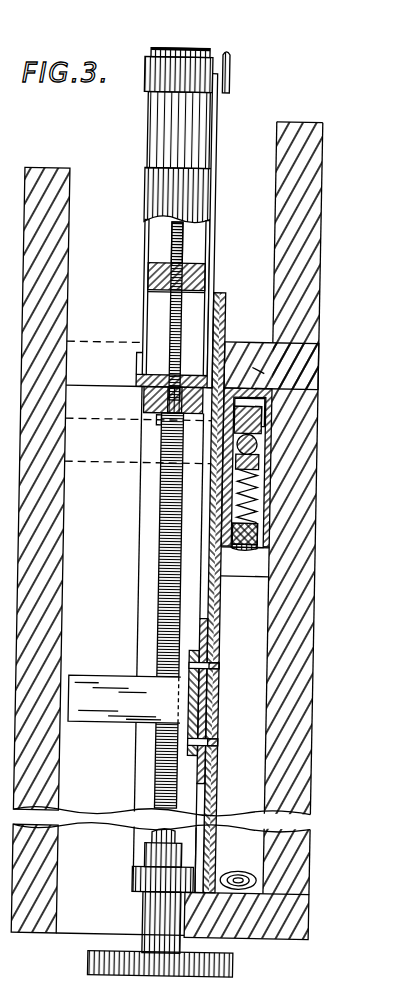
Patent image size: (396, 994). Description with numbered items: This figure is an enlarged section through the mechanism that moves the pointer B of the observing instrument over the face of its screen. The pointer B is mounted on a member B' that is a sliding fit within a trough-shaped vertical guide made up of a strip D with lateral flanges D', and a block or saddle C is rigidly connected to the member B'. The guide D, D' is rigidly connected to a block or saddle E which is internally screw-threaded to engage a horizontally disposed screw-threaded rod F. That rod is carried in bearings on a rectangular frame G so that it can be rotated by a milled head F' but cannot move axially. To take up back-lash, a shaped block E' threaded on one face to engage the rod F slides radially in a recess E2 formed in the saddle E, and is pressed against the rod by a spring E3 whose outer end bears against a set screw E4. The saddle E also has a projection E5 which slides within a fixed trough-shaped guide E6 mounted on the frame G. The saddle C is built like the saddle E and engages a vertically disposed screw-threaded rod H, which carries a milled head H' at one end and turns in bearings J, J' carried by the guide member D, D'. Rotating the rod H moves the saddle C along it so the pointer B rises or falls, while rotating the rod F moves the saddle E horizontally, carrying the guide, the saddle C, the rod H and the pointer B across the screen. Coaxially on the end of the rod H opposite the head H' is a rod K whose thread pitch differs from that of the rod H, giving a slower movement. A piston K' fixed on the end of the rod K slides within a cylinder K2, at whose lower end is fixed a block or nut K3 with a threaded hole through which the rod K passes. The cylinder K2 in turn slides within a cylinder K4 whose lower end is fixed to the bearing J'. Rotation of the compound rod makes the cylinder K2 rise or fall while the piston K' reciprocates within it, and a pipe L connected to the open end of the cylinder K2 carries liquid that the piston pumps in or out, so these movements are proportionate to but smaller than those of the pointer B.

The pipe L is at (168, 57).
The pointer B is at (254, 73).
The piston K' is at (159, 195).
The cylinder K2 is at (157, 249).
The block or nut K3 is at (148, 276).
The rod K is at (144, 310).
The cylinder K4 is at (143, 322).
The milled head F' is at (252, 338).
The rectangular frame G is at (293, 283).
The trough shaped guide E6 is at (240, 372).
The projection E5 is at (262, 400).
The block or saddle E is at (283, 468).
The screw-threaded rod F is at (290, 453).
The shaped block E' is at (291, 448).
The recess E2 is at (260, 490).
The spring E3 is at (259, 513).
The set screw E4 is at (262, 532).
The strip D is at (277, 594).
The member B' is at (280, 363).
The bearing J' is at (153, 402).
The screw-threaded rod H is at (138, 610).
The lateral flanges D' is at (151, 725).
The block or saddle C is at (174, 703).
The bearing J is at (137, 869).
The milled head H' is at (131, 964).